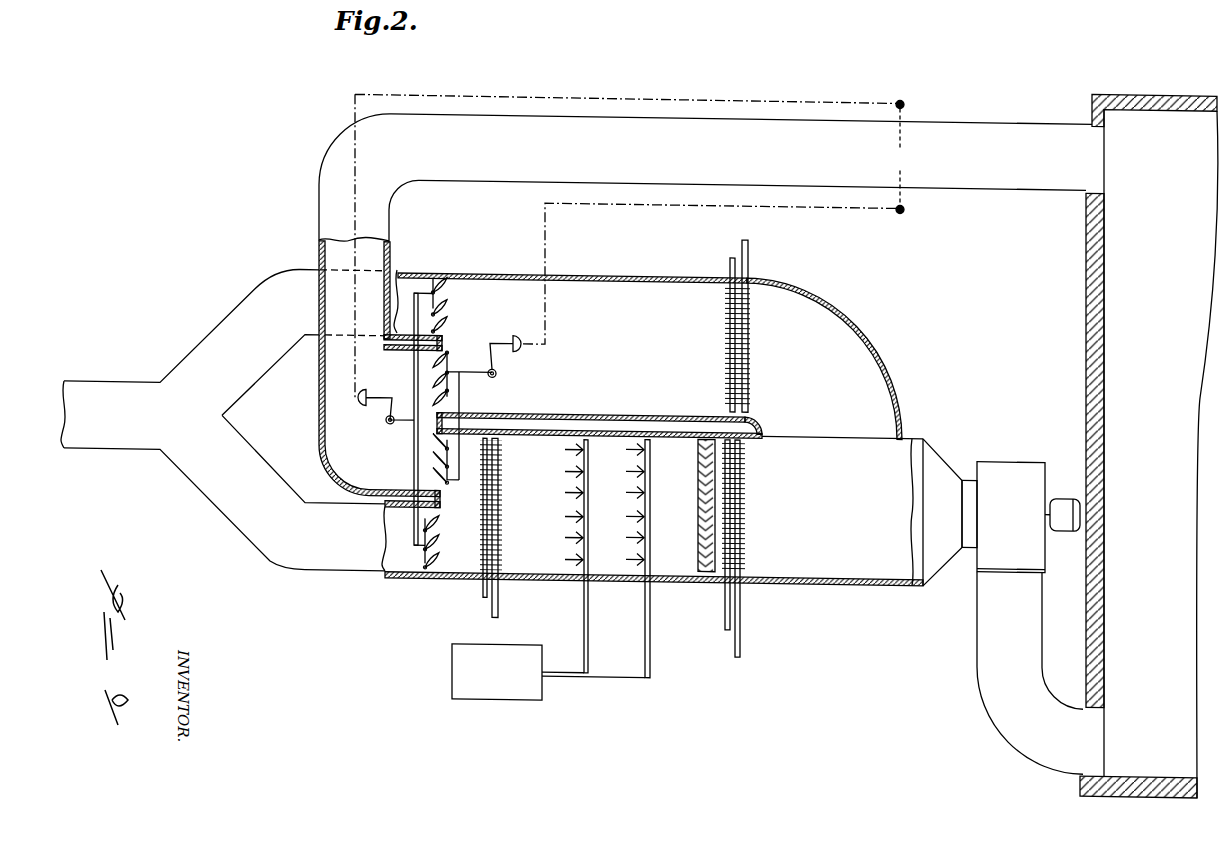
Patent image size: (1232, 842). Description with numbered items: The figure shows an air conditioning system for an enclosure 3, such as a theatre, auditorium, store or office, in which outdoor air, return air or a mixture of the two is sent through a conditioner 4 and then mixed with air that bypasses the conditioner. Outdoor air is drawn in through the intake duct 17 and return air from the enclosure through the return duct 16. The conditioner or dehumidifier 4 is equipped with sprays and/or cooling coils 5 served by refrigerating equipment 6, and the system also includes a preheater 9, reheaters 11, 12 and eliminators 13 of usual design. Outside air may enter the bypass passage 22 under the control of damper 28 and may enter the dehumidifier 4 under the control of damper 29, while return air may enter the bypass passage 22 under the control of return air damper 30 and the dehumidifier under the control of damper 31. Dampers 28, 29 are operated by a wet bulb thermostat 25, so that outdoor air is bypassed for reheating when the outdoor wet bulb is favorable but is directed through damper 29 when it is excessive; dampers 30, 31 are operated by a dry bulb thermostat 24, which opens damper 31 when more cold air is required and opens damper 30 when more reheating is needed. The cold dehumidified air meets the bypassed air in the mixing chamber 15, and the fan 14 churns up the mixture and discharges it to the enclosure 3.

The enclosure 3 is at (1140, 326).
The conditioner 4 is at (674, 558).
The sprays and/or cooling coils 5 is at (633, 513).
The refrigerating equipment 6 is at (537, 648).
The preheater 9 is at (500, 494).
The reheater 11 is at (750, 346).
The reheater 12 is at (743, 479).
The eliminators 13 is at (698, 481).
The fan 14 is at (1027, 457).
The mixing chamber 15 is at (897, 560).
The return duct 16 is at (500, 162).
The intake duct 17 is at (113, 441).
The bypass passage 22 is at (640, 275).
The dry bulb thermostat 24 is at (904, 199).
The wet bulb thermostat 25 is at (905, 94).
The outdoor air damper 28 is at (450, 298).
The outdoor air damper 29 is at (446, 526).
The return air damper 30 is at (449, 354).
The return air damper 31 is at (452, 474).